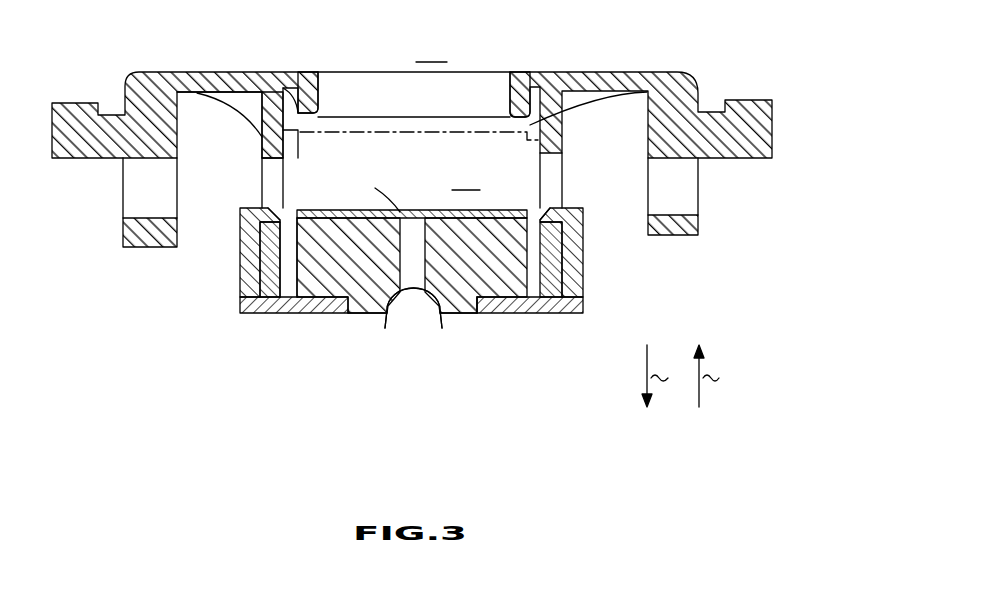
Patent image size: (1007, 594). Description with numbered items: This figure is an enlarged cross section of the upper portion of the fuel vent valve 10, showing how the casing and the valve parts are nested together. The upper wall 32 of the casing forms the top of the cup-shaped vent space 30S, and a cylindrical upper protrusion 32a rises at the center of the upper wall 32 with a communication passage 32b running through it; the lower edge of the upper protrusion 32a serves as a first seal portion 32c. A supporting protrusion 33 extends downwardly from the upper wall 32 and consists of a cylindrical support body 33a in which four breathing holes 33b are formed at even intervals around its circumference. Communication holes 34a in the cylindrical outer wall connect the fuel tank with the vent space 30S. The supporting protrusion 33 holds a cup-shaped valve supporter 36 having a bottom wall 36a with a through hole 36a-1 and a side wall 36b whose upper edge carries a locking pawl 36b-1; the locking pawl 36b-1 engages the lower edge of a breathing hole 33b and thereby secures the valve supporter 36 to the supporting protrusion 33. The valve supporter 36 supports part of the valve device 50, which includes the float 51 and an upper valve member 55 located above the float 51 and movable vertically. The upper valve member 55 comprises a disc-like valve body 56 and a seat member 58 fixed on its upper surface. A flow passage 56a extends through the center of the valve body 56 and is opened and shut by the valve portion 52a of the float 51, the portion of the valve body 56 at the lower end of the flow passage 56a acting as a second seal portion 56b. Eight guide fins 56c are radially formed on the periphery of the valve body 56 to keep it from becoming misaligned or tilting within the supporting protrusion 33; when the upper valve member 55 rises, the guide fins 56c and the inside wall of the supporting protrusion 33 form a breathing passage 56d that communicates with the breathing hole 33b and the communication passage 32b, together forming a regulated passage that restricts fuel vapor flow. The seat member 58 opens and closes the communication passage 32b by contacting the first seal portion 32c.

The fluid device 10 is at (748, 58).
The vent space 30S is at (596, 100).
The upper wall 32 is at (565, 72).
The upper protrusion 32a is at (510, 72).
The communication passage 32b is at (388, 100).
The first seal portion 32c is at (320, 100).
The supporting protrusion 33 is at (223, 72).
The cylindrical support body 33a is at (172, 72).
The breathing holes 33b is at (273, 178).
The communication holes 34a is at (148, 192).
The valve supporter 36 is at (240, 283).
The bottom wall 36a is at (553, 313).
The through hole 36a-1 is at (467, 295).
The side wall 36b is at (240, 282).
The locking pawl 36b-1 is at (243, 223).
The valve device 50 is at (738, 282).
The float 51 is at (452, 349).
The valve portion 52a is at (442, 320).
The upper valve member 55 is at (494, 201).
The valve body 56 is at (435, 201).
The flow passage 56a is at (412, 212).
The second seal portion 56b is at (395, 303).
The guide fins 56c is at (290, 267).
The breathing passage 56d is at (285, 88).
The seat member 58 is at (552, 232).